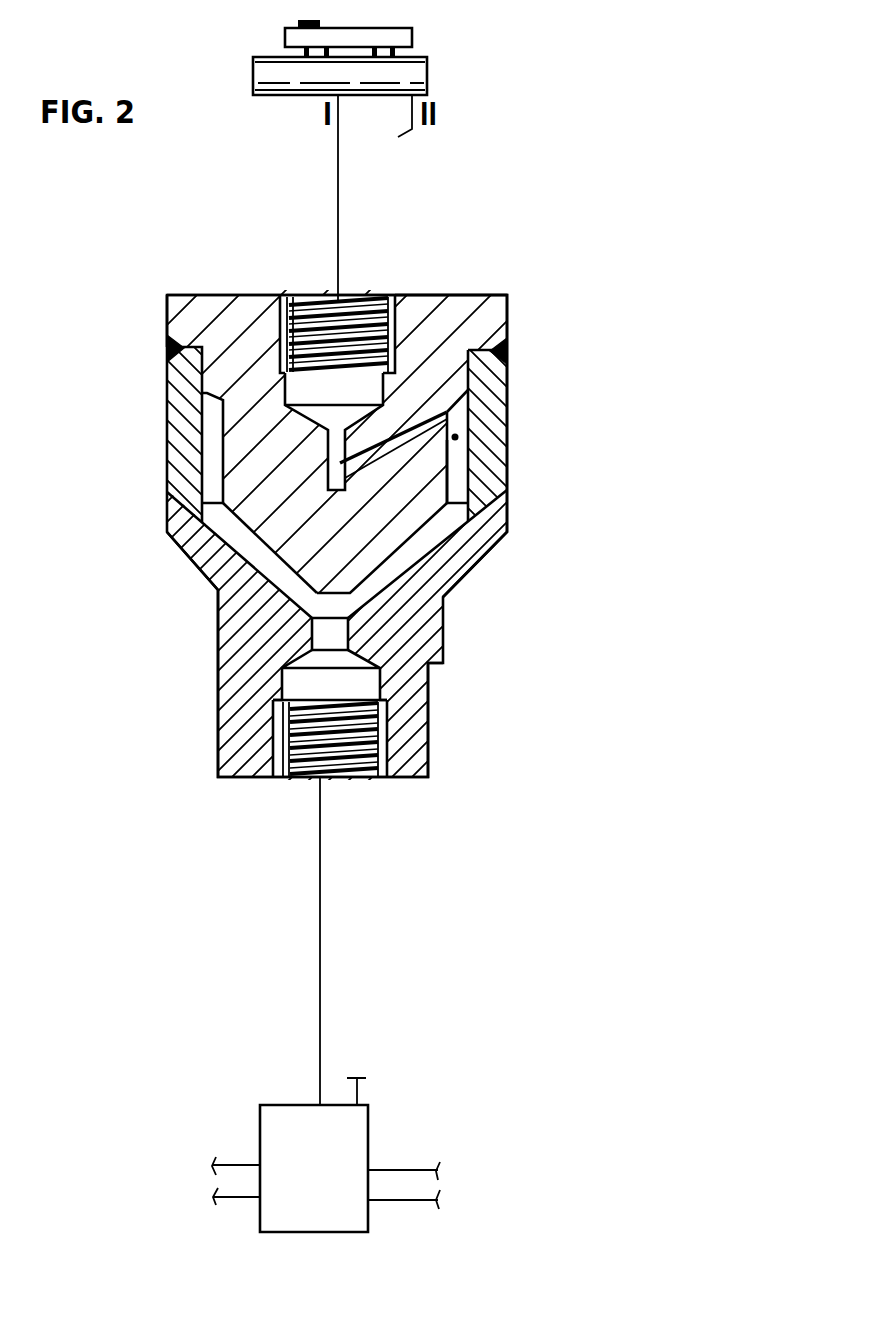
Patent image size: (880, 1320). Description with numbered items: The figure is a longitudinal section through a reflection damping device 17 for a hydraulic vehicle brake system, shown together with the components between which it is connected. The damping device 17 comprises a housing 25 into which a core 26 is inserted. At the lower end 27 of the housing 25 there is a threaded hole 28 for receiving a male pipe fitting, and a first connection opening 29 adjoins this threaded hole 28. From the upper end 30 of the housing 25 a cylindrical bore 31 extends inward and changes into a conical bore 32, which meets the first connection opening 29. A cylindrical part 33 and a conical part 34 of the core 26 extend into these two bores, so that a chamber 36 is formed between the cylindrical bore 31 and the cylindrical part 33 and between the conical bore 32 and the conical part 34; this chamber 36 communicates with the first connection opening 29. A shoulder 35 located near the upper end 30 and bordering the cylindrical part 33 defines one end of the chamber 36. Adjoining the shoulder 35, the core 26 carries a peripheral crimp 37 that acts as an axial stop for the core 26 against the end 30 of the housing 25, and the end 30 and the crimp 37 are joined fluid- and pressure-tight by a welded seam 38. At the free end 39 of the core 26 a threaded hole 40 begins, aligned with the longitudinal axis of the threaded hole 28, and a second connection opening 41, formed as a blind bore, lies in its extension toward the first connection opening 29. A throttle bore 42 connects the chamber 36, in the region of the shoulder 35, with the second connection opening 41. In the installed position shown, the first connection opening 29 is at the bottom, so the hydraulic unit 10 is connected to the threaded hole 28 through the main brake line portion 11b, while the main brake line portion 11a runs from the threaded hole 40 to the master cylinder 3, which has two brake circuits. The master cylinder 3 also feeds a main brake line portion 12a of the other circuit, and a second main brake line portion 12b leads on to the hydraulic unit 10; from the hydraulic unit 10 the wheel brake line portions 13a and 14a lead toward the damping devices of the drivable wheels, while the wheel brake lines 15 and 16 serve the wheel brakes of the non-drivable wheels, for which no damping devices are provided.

The master cylinder 3 is at (413, 70).
The hydraulic unit 10 is at (272, 1122).
The main brake line portion 11a is at (337, 211).
The main brake line portion 11b is at (319, 1000).
The main brake line portion 12a is at (417, 129).
The second main brake line portion 12b is at (358, 1092).
The wheel brake line portion 13a is at (222, 1162).
The wheel brake line portion 14a is at (398, 1170).
The wheel brake line 15 is at (242, 1198).
The wheel brake line 16 is at (406, 1202).
The reflection damping device 17 is at (558, 302).
The housing 25 is at (457, 566).
The core 26 is at (438, 457).
The lower end 27 is at (228, 750).
The threaded hole 28 is at (284, 779).
The first connection opening 29 is at (326, 633).
The upper end 30 is at (491, 389).
The cylindrical bore 31 is at (203, 418).
The conical bore 32 is at (216, 513).
The cylindrical part 33 is at (458, 437).
The conical part 34 is at (433, 528).
The shoulder 35 is at (202, 408).
The chamber 36 is at (458, 481).
The peripheral crimp 37 is at (168, 296).
The welded seam 38 is at (508, 350).
The free end 39 is at (440, 294).
The threaded hole 40 is at (296, 294).
The second connection opening 41 is at (335, 436).
The throttle bore 42 is at (473, 409).